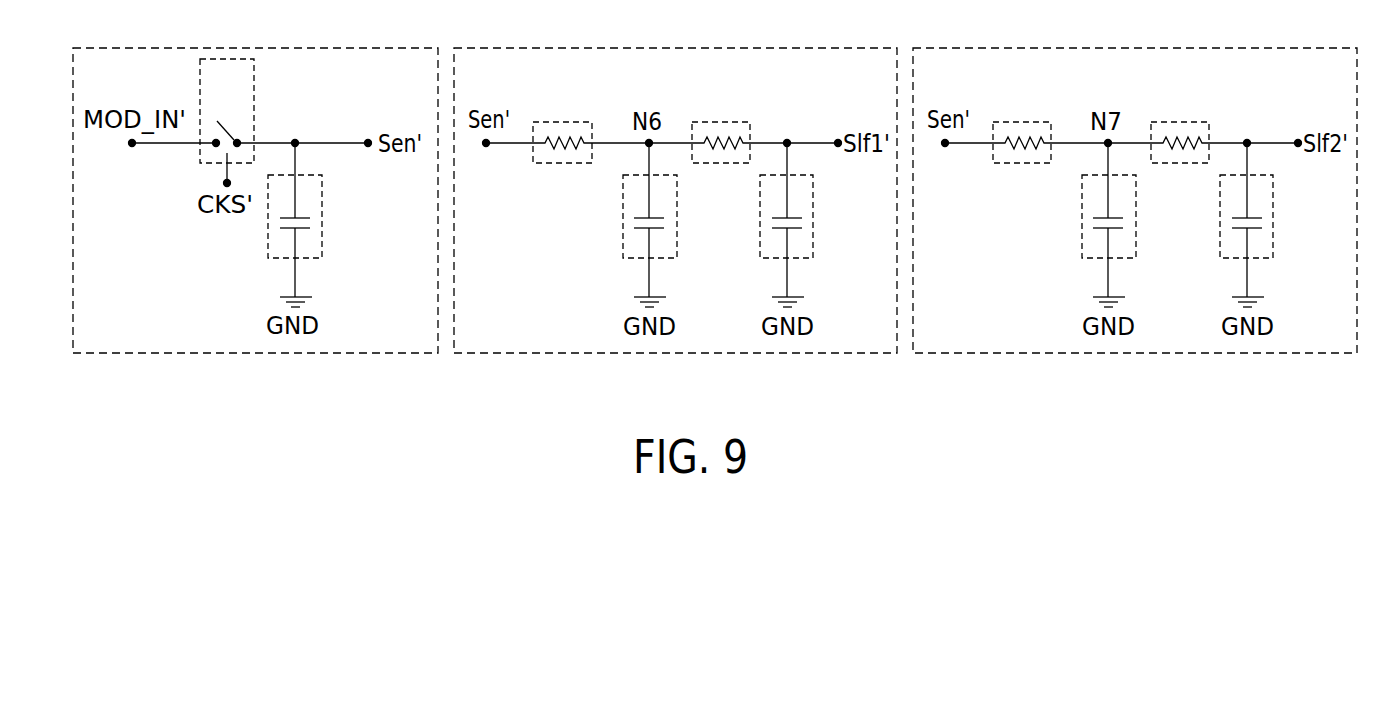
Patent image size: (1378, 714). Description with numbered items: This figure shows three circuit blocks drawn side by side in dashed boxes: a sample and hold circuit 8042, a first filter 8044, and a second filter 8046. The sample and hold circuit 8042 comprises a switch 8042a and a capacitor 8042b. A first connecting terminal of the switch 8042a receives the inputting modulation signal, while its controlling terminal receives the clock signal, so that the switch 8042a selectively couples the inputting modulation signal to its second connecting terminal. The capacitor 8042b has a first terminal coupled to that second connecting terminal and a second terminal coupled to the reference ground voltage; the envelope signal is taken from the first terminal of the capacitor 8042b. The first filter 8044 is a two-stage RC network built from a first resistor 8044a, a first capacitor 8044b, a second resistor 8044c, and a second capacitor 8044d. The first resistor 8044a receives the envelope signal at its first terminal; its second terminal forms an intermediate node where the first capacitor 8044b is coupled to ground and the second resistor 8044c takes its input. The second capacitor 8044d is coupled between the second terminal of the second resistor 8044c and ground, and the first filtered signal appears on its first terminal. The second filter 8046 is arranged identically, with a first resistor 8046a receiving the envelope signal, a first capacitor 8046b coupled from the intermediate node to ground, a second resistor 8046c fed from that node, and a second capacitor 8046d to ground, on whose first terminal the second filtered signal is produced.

The sample and hold circuit 8042 is at (318, 48).
The switch 8042a is at (237, 59).
The capacitor 8042b is at (322, 192).
The first filter 8044 is at (753, 48).
The first resistor 8044a is at (572, 122).
The first capacitor 8044b is at (623, 239).
The second resistor 8044c is at (731, 122).
The second capacitor 8044d is at (813, 193).
The second filter 8046 is at (1213, 48).
The first resistor 8046a is at (1031, 122).
The first capacitor 8046b is at (1082, 239).
The second resistor 8046c is at (1191, 122).
The second capacitor 8046d is at (1273, 193).